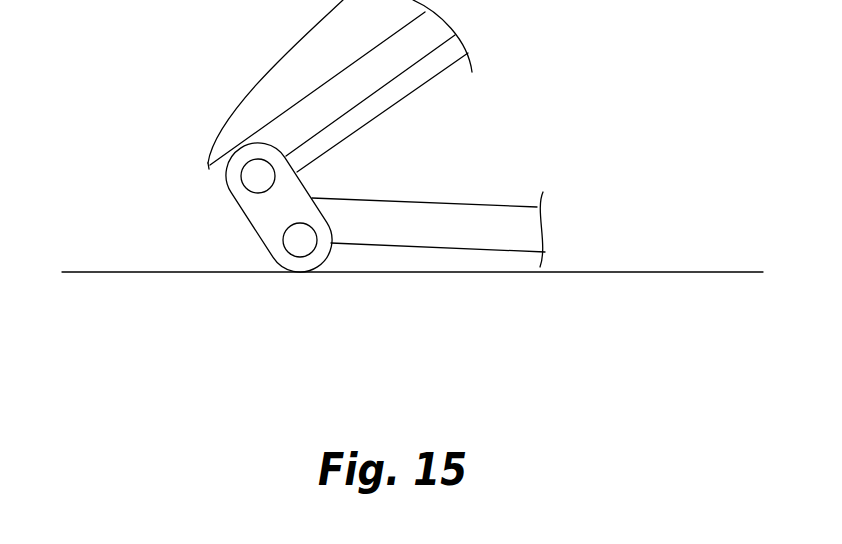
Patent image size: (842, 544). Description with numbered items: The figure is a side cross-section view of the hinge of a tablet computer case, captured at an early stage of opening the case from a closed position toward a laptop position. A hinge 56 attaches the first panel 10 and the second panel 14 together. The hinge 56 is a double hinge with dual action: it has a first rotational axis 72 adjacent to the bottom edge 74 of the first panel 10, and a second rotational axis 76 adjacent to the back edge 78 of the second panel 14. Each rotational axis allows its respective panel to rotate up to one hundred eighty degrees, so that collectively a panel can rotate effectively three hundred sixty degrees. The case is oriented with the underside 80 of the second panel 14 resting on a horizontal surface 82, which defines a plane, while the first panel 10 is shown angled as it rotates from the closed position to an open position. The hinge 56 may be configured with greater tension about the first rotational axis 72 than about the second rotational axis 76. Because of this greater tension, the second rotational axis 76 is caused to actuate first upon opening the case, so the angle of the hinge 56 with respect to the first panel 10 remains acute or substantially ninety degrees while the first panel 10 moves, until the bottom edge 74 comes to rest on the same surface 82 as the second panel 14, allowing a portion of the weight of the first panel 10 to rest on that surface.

The first panel 10 is at (288, 50).
The second panel 14 is at (510, 207).
The hinge 56 is at (245, 218).
The first rotational axis 72 is at (256, 175).
The bottom edge 74 is at (208, 161).
The second rotational axis 76 is at (300, 248).
The back edge 78 is at (320, 194).
The underside 80 is at (422, 248).
The horizontal surface 82 is at (710, 272).